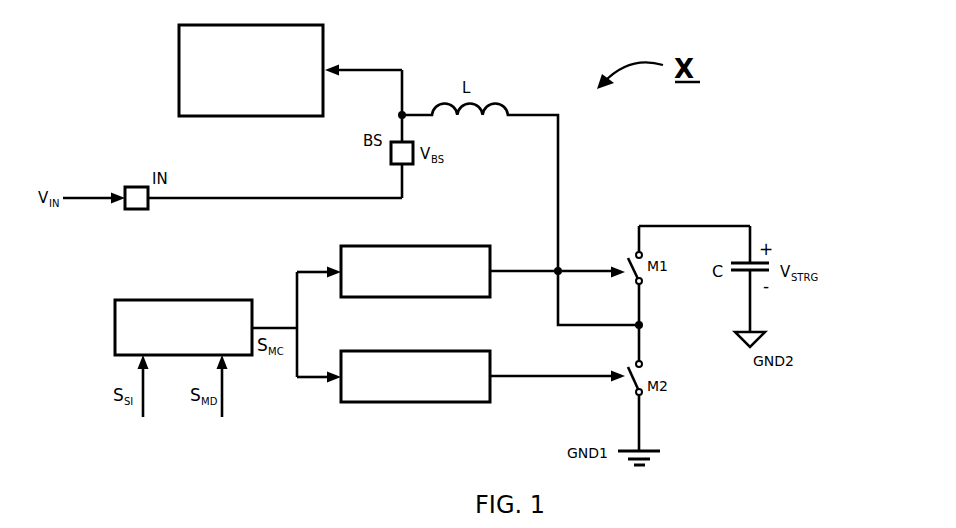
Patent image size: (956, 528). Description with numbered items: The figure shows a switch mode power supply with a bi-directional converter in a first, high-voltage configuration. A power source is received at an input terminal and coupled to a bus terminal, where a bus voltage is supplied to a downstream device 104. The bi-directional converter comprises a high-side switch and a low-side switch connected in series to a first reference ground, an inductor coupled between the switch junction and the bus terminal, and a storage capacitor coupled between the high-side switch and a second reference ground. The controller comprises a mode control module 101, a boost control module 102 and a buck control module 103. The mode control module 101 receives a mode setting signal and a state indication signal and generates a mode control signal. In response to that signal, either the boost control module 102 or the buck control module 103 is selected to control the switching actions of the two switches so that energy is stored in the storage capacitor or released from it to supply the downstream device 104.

The mode control module 101 is at (186, 291).
The boost control module 102 is at (477, 246).
The buck control module 103 is at (490, 351).
The downstream device 104 is at (179, 72).